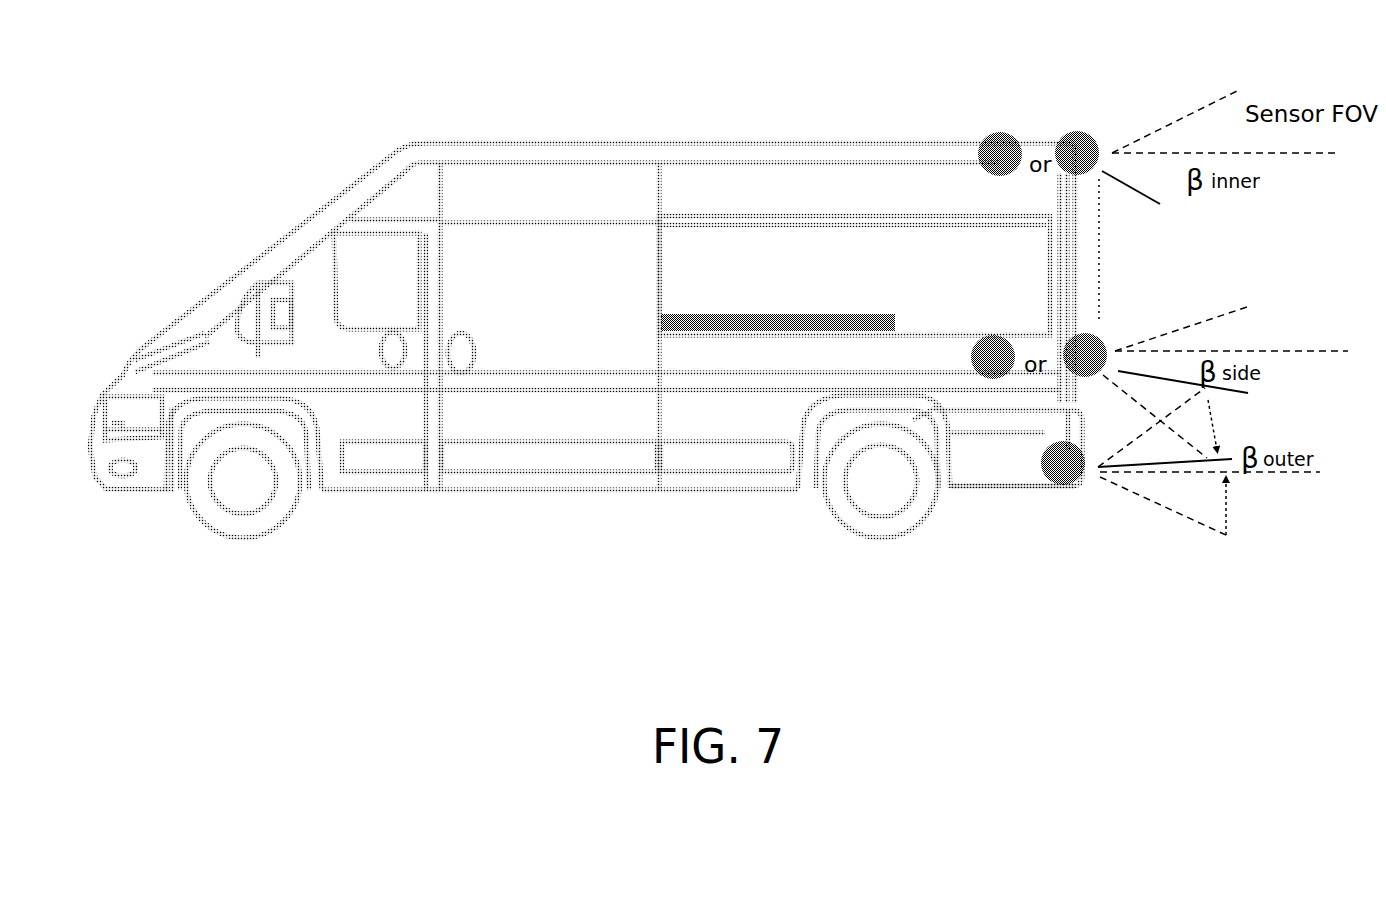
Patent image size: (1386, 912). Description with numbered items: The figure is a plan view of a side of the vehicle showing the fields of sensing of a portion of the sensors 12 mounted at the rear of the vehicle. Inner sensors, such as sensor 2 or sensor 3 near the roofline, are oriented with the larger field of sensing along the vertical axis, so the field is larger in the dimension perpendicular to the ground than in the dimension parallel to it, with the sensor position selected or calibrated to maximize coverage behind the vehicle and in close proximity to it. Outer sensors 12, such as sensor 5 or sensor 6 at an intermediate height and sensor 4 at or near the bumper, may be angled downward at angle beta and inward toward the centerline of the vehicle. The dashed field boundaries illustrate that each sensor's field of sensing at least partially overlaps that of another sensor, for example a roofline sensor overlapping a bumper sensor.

The sensors 12 is at (1002, 300).
The sensor '2' 2 is at (1000, 154).
The sensor '3' 3 is at (1077, 153).
The sensor '4' 4 is at (1063, 463).
The sensor '5' 5 is at (993, 357).
The sensor '6' 6 is at (1085, 355).